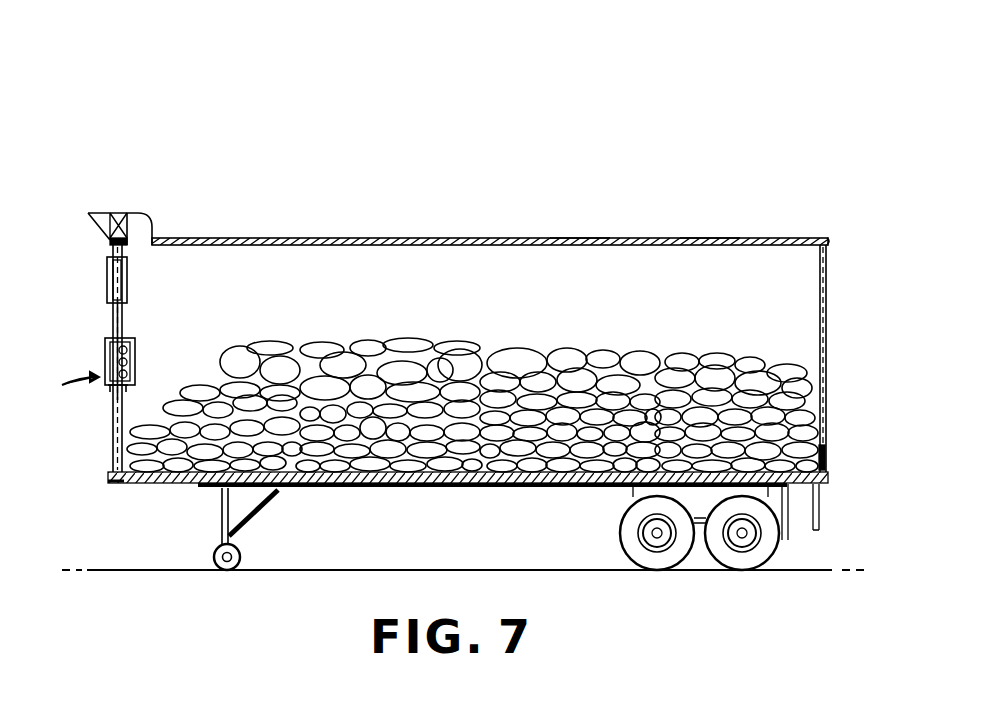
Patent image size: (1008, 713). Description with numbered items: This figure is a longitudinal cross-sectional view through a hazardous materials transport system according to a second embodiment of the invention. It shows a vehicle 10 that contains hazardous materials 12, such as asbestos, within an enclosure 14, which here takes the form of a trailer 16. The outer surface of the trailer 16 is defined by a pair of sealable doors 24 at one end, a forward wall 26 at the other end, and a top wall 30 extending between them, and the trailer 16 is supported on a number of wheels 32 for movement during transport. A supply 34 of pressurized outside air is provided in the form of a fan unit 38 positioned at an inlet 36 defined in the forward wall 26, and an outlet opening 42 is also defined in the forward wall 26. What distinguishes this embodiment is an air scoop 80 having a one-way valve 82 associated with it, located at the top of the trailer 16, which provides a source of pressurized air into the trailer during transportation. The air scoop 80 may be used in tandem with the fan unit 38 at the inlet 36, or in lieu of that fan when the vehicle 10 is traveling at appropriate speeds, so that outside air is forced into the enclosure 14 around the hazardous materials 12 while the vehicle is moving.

The vehicle 10 is at (565, 165).
The hazardous materials 12 is at (633, 350).
The enclosure 14 is at (576, 238).
The trailer 16 is at (702, 237).
The sealable doors 24 is at (826, 312).
The forward wall 26 is at (115, 450).
The top wall 30 is at (390, 238).
The wheels 32 is at (625, 530).
The supply of pressurized outside air 34 is at (102, 352).
The inlet 36 is at (105, 366).
The fan unit 38 is at (111, 384).
The outlet opening 42 is at (107, 286).
The air scoop 80 is at (89, 218).
The one-way valve 82 is at (120, 216).